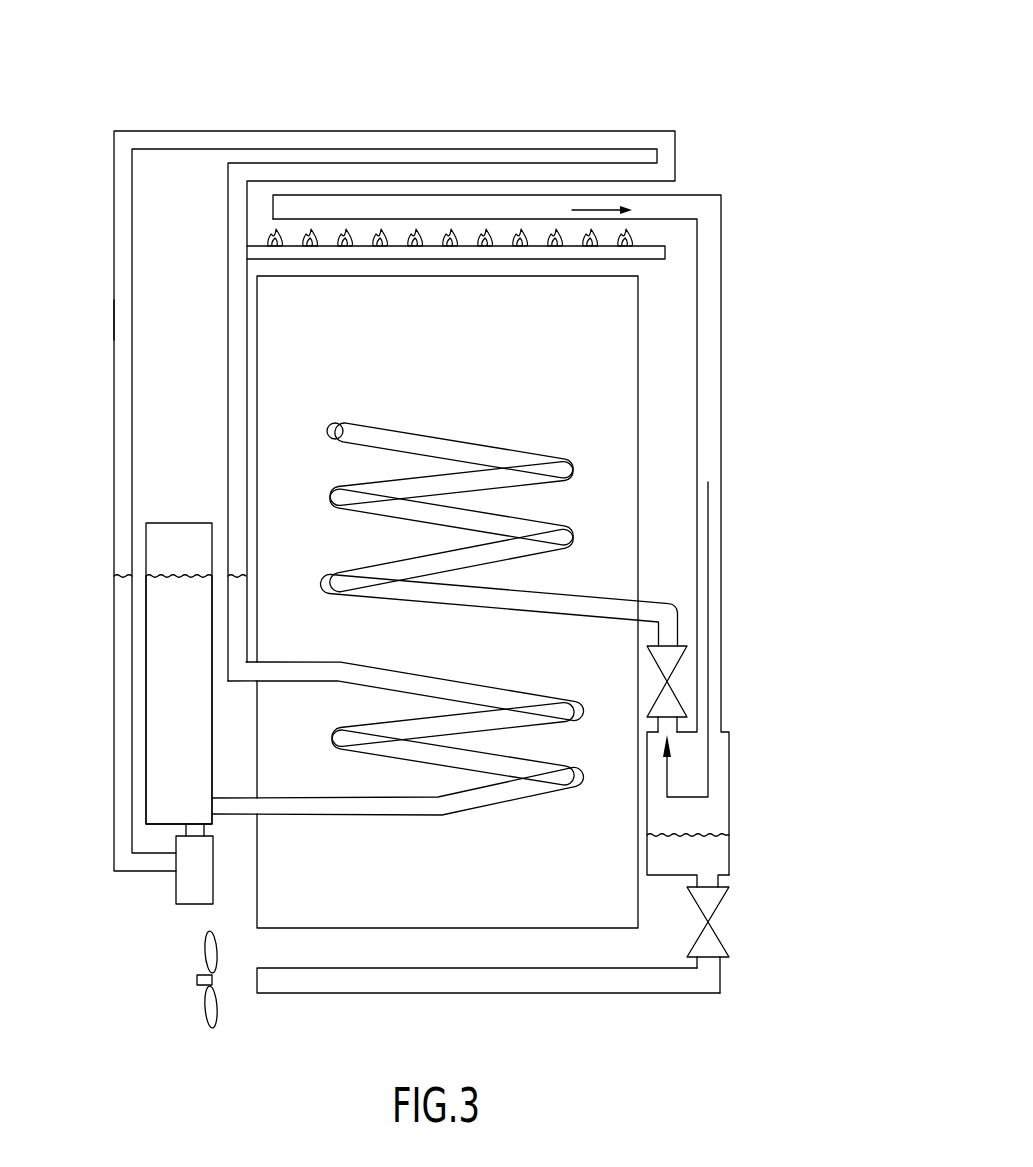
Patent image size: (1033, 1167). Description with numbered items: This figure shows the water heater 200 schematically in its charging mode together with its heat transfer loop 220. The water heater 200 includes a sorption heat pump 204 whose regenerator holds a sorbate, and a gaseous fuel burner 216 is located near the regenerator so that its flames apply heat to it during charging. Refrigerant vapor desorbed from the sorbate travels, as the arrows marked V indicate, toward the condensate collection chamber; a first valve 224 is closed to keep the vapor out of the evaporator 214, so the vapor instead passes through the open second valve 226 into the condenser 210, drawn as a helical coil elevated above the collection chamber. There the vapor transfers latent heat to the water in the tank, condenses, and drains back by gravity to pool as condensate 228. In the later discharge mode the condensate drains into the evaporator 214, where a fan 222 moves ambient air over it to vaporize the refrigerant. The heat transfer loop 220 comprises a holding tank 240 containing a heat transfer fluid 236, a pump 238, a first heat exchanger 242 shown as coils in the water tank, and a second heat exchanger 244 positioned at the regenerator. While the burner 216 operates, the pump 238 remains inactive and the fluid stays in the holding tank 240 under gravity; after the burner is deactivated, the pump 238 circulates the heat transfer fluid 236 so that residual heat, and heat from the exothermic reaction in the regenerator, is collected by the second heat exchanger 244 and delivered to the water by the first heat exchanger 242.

The water heater 200 is at (693, 83).
The sorption heat pump 204 is at (745, 344).
The condenser 210 is at (497, 450).
The evaporator 214 is at (553, 993).
The gaseous fuel burner 216 is at (393, 260).
The heat transfer loop 220 is at (104, 318).
The fan 222 is at (207, 1028).
The first valve 224 is at (713, 945).
The second valve 226 is at (663, 658).
The condensate 228 is at (715, 858).
The heat transfer fluid 236 is at (160, 757).
The pump 238 is at (188, 895).
The holding tank 240 is at (180, 523).
The first heat exchanger 242 is at (430, 821).
The second heat exchanger 244 is at (377, 131).